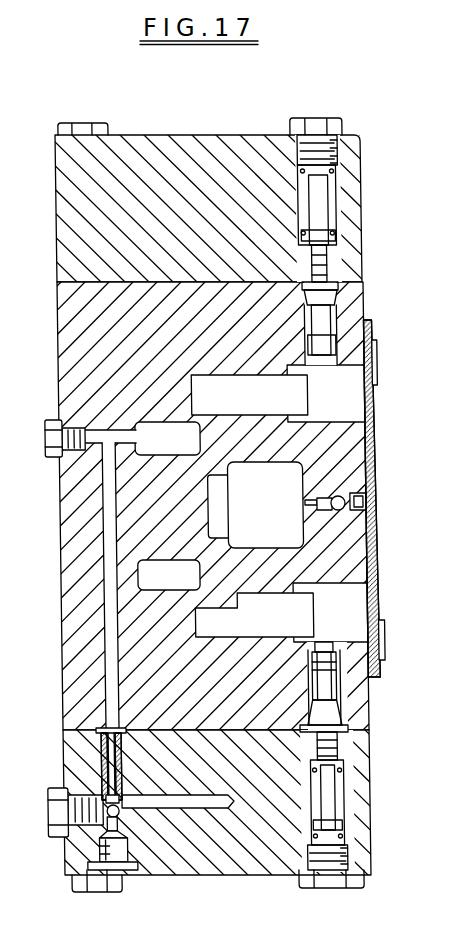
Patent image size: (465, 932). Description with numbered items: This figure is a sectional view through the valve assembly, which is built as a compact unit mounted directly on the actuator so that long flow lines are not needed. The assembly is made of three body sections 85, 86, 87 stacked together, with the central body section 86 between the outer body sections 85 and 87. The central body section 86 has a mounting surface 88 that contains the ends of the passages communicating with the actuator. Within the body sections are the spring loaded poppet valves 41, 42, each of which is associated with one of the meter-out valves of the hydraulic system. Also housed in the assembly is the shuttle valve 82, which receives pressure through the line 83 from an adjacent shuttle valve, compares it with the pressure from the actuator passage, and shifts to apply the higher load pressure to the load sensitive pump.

The body section 85 is at (61, 220).
The central body section 86 is at (352, 477).
The body section 87 is at (358, 792).
The mounting surface 88 is at (366, 424).
The spring loaded poppet valve 42 is at (324, 266).
The spring loaded poppet valve 41 is at (322, 735).
The line 83 is at (101, 685).
The shuttle valve 82 is at (102, 814).